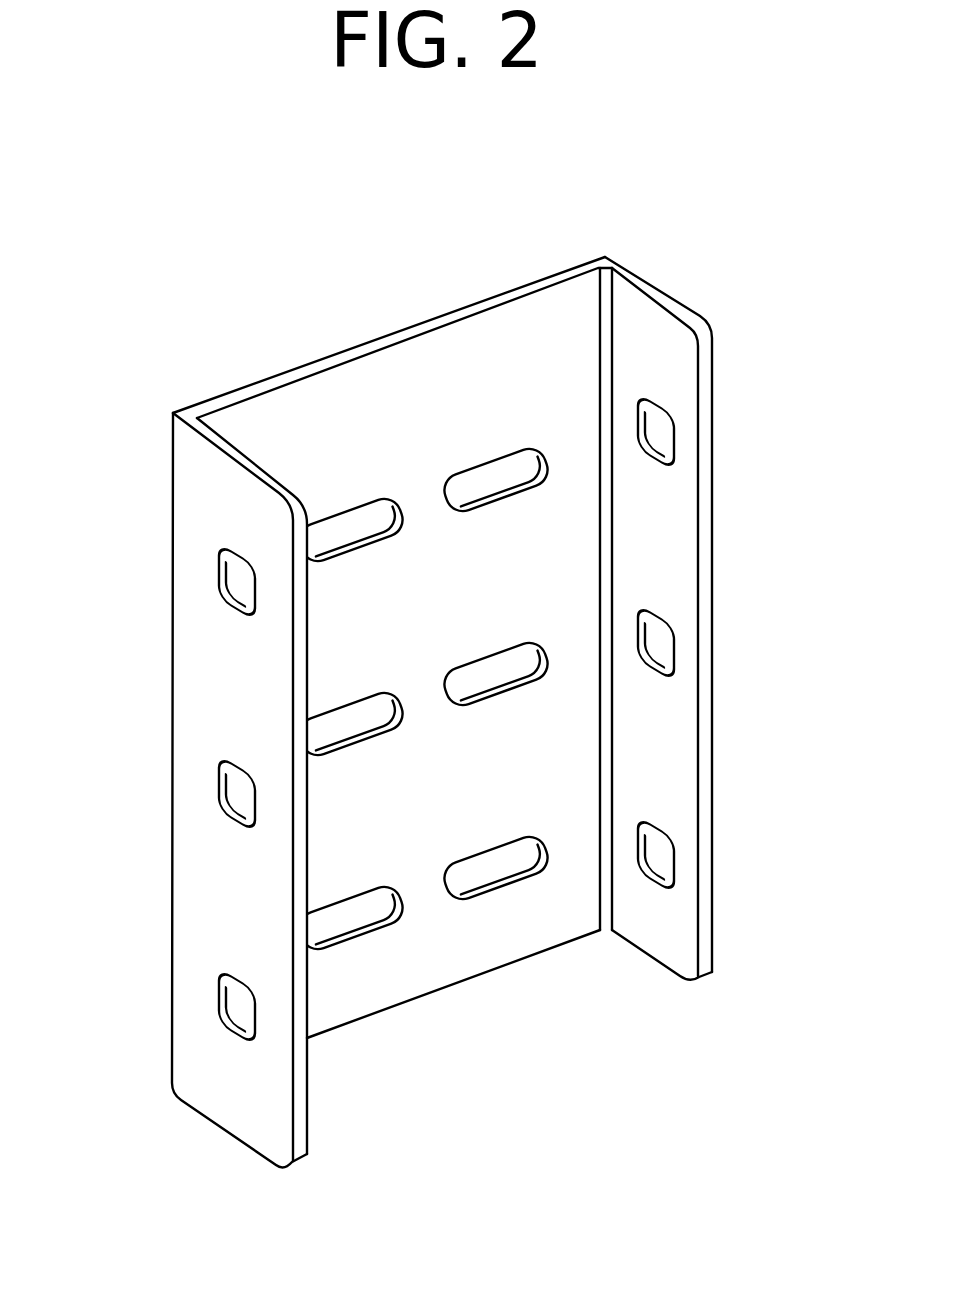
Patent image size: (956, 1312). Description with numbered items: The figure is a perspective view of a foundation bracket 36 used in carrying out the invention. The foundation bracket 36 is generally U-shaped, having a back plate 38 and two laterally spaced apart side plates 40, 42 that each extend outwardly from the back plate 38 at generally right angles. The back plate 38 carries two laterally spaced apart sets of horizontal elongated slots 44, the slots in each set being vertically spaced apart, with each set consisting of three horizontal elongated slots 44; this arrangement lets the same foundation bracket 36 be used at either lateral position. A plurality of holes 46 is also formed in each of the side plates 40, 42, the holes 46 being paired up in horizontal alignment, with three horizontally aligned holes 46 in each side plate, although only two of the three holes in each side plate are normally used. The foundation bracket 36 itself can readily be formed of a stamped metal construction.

The foundation bracket 36 is at (522, 962).
The back plate 38 is at (478, 337).
The side plate 40 is at (228, 440).
The side plate 42 is at (670, 293).
The horizontal elongated slots 44 is at (478, 464).
The holes 46 is at (217, 578).